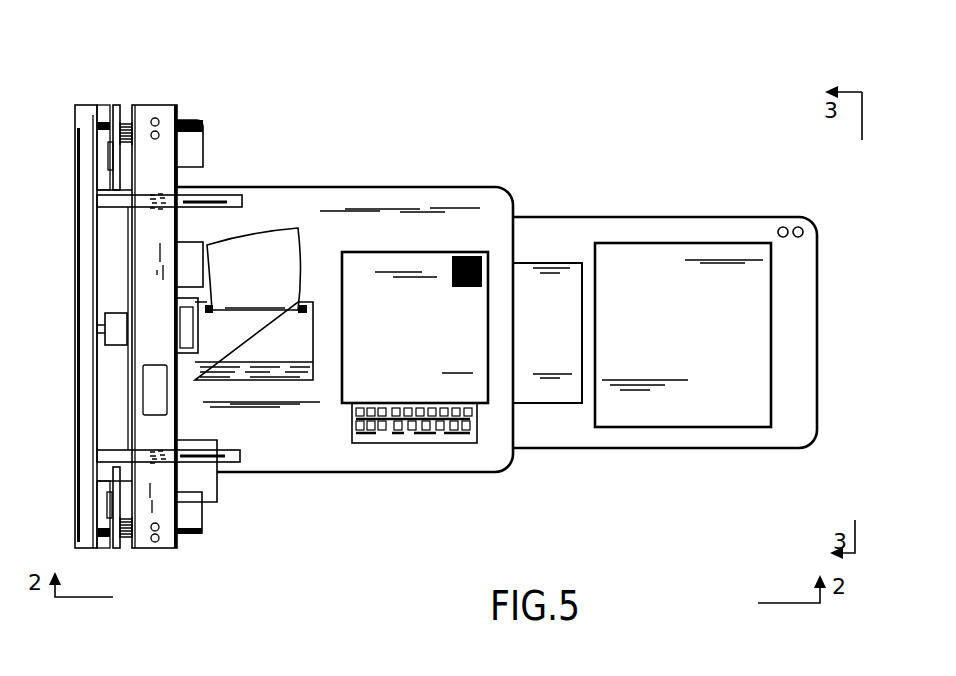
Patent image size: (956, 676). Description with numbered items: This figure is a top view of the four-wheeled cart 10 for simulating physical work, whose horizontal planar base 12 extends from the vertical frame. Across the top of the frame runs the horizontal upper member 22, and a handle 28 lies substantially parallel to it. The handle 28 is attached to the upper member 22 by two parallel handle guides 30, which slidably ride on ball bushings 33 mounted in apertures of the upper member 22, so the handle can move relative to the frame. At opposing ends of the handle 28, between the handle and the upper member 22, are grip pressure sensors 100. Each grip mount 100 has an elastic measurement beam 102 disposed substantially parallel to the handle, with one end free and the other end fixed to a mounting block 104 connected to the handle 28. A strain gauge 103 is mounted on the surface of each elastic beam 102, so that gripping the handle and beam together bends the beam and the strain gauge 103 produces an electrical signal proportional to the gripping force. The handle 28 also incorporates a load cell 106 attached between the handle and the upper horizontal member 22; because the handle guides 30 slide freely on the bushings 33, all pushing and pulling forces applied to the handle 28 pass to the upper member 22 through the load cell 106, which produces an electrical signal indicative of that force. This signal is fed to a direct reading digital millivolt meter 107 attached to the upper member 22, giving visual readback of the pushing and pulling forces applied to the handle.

The four-wheeled cart 10 is at (612, 119).
The horizontal planar base 12 is at (585, 447).
The horizontal upper member 22 is at (163, 112).
The handle 28 is at (87, 173).
The handle guides 30 is at (112, 202).
The ball bushings 33 is at (162, 215).
The grip pressure sensors 100 is at (107, 79).
The elastic measurement beam 102 is at (117, 173).
The strain gauge 103 is at (110, 153).
The mounting block 104 is at (107, 115).
The load cell 106 is at (105, 320).
The digital millivolt meter 107 is at (197, 328).